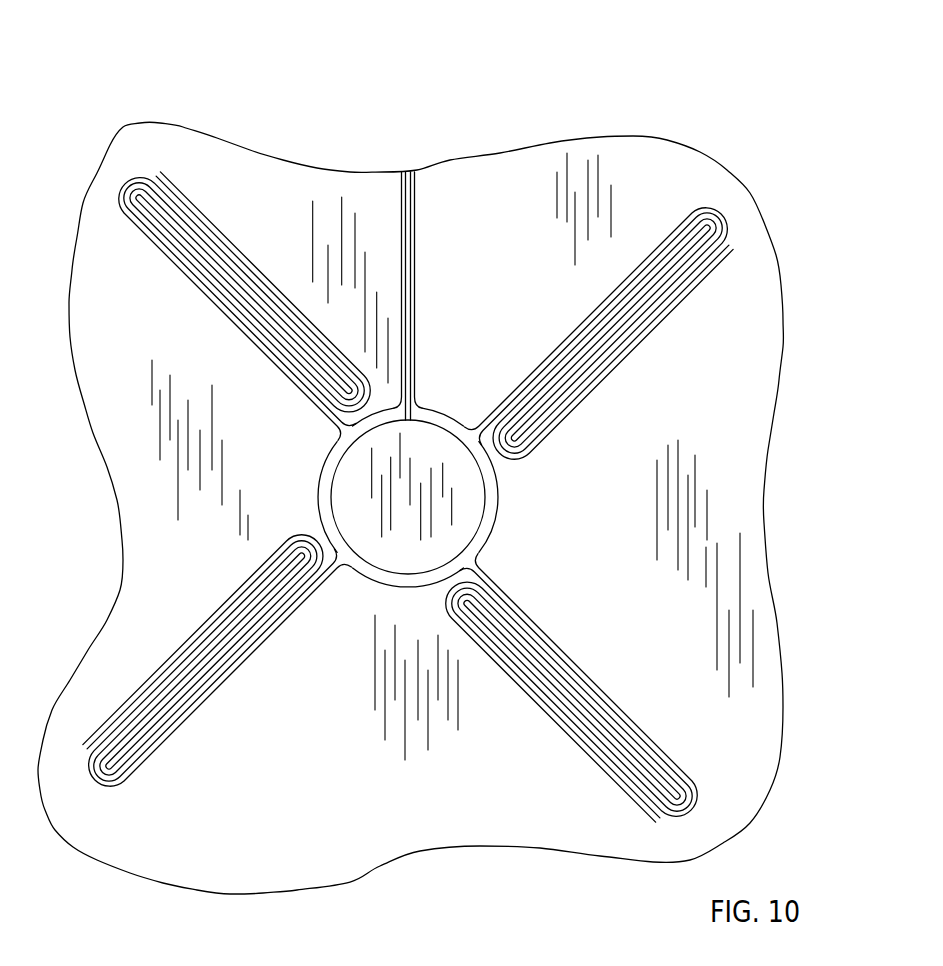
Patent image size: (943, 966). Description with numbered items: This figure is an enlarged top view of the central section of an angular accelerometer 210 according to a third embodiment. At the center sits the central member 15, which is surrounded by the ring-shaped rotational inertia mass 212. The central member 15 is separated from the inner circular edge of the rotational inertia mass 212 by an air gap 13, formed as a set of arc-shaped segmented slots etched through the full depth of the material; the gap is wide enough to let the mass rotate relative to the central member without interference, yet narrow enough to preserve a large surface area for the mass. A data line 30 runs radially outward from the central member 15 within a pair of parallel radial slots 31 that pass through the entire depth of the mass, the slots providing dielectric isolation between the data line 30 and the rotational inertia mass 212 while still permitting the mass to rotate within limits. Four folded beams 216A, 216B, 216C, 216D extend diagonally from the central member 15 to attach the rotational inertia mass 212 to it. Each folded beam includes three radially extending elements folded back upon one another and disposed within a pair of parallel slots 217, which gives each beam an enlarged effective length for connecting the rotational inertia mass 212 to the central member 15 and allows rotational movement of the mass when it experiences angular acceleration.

The angular accelerometer 210 is at (548, 108).
The rotational inertia mass 212 is at (757, 322).
The air gap 13 is at (493, 499).
The central member 15 is at (347, 493).
The data line 30 is at (408, 236).
The radial slots 31 is at (417, 273).
The folded beam 216A is at (138, 225).
The folded beam 216B is at (656, 318).
The folded beam 216C is at (610, 757).
The folded beam 216D is at (200, 658).
The parallel slots 217 is at (408, 497).